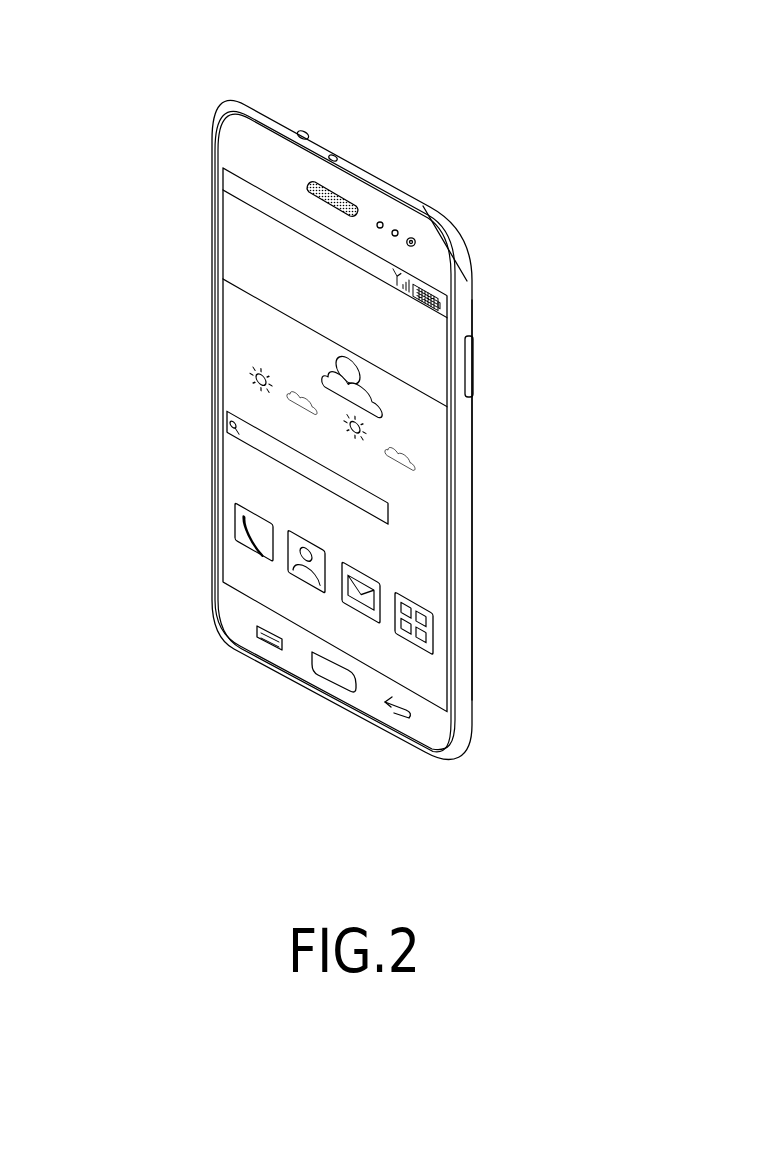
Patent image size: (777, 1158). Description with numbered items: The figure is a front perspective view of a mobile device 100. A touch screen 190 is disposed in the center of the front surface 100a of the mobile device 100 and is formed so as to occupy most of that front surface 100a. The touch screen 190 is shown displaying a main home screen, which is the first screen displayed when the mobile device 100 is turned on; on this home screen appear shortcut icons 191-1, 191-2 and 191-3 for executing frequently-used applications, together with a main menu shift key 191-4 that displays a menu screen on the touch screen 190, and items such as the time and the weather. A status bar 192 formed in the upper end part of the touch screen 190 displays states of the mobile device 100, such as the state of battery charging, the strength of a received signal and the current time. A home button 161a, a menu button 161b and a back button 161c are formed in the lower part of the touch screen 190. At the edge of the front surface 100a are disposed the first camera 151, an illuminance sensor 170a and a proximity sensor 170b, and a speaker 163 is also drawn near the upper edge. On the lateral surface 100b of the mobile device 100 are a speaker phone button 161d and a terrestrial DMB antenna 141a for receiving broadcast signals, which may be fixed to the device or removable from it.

The mobile device 100 is at (293, 387).
The front surface 100a is at (266, 431).
The lateral surface 100b is at (524, 500).
The terrestrial DMB antenna 141a is at (498, 234).
The first camera 151 is at (452, 180).
The home button 161a is at (294, 719).
The menu button 161b is at (203, 660).
The back button 161c is at (380, 772).
The speaker phone button 161d is at (531, 366).
The speaker 163 is at (296, 132).
The illuminance sensor 170a is at (360, 152).
The proximity sensor 170b is at (419, 160).
The touch screen 190 is at (252, 415).
The shortcut icon 191-1 is at (193, 529).
The shortcut icon 191-2 is at (219, 521).
The shortcut icon 191-3 is at (455, 588).
The main menu shift key 191-4 is at (487, 624).
The status bar 192 is at (270, 440).